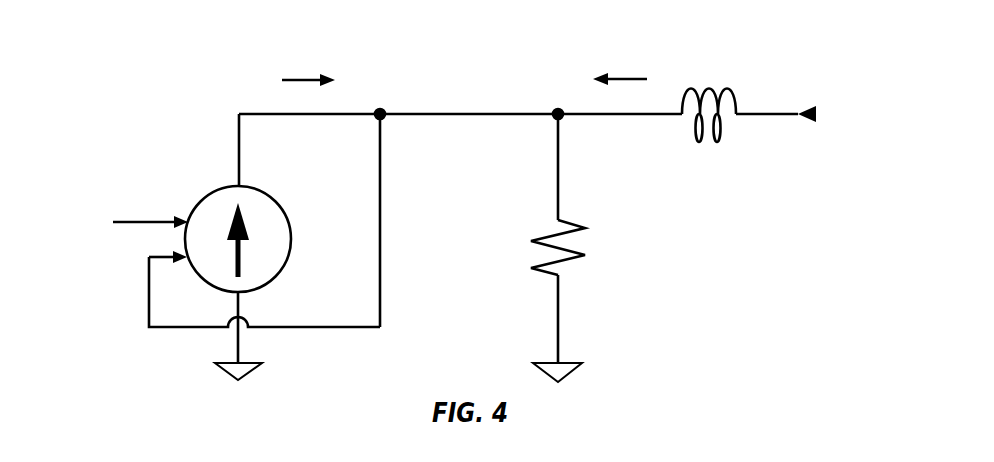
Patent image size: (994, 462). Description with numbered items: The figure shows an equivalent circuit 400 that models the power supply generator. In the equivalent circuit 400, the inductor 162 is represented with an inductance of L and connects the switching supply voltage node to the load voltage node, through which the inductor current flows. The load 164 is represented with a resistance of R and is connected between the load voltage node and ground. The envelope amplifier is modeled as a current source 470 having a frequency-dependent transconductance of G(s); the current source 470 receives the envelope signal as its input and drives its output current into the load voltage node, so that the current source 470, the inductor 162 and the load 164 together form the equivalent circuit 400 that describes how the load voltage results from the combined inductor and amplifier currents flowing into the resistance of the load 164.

The equivalent circuit 400 is at (158, 70).
The current source 470 is at (213, 190).
The inductor 162 is at (709, 88).
The load 164 is at (575, 222).